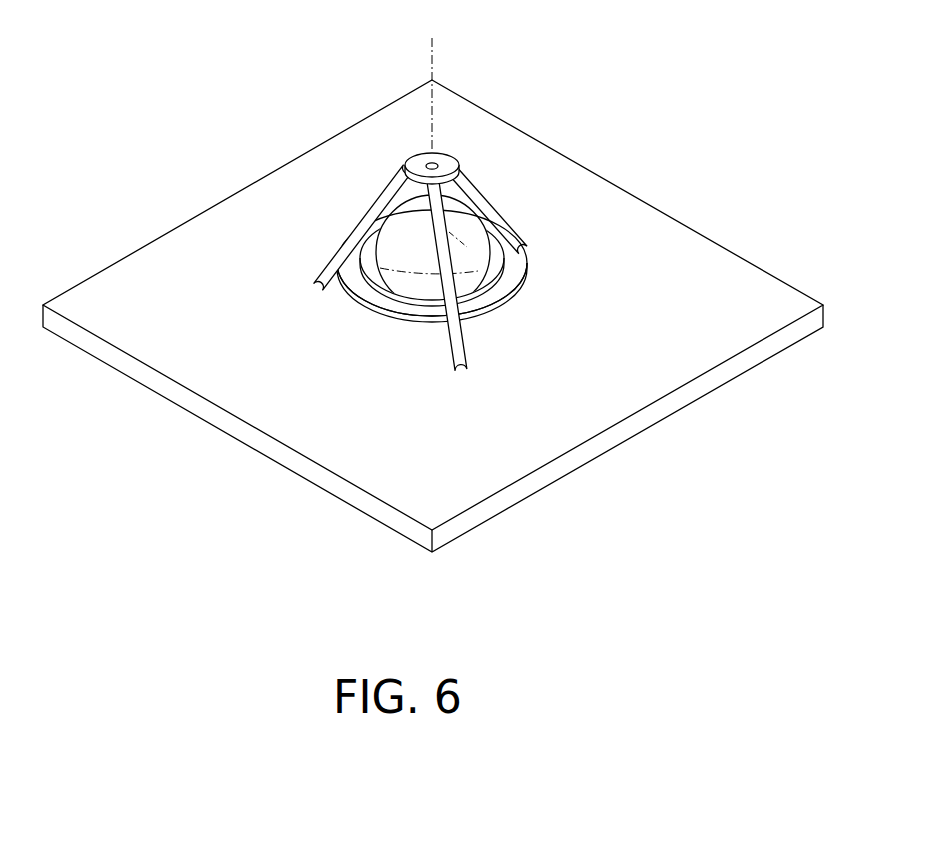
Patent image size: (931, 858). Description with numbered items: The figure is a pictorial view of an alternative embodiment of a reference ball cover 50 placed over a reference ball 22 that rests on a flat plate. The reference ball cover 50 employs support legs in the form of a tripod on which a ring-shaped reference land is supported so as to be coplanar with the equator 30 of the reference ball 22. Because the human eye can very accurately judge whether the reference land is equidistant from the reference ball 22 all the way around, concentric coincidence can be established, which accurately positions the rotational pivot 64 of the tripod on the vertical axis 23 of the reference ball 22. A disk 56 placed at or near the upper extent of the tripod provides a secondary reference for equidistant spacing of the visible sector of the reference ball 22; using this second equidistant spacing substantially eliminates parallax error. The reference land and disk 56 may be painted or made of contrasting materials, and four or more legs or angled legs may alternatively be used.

The reference ball 22 is at (467, 247).
The vertical axis 23 is at (433, 60).
The equator 30 is at (403, 277).
The reference ball cover 50 is at (399, 205).
The disk 56 is at (429, 111).
The rotational pivot 64 is at (430, 159).